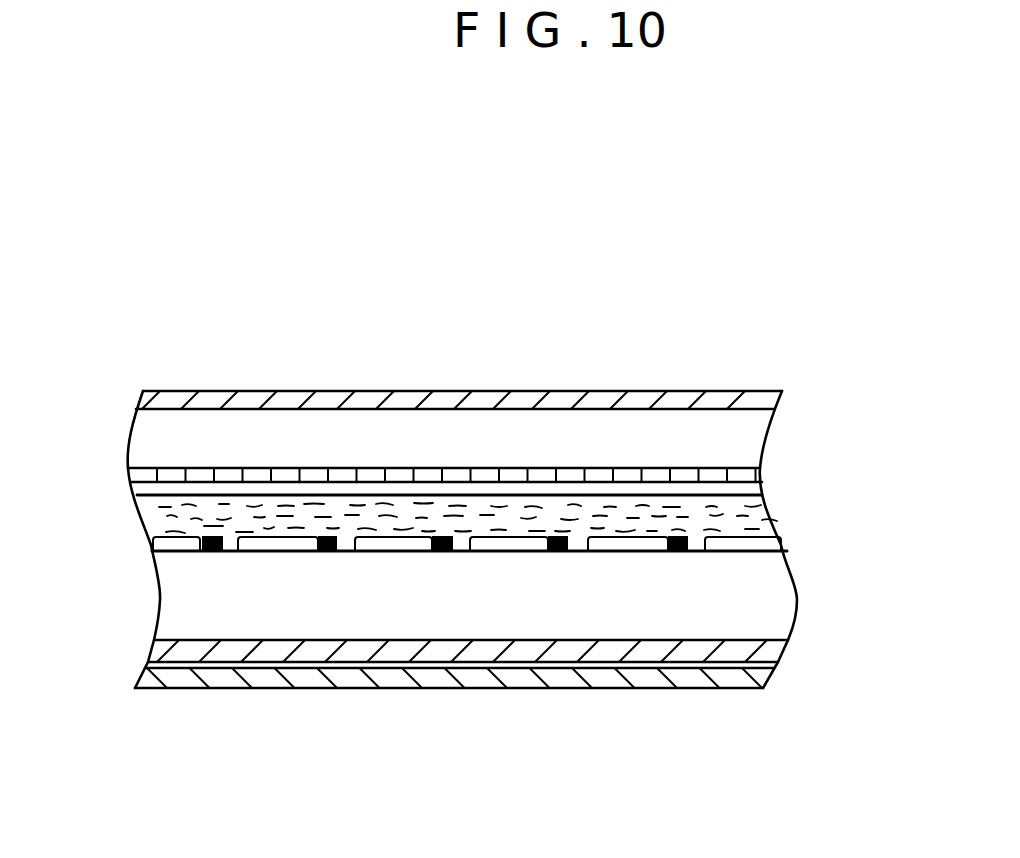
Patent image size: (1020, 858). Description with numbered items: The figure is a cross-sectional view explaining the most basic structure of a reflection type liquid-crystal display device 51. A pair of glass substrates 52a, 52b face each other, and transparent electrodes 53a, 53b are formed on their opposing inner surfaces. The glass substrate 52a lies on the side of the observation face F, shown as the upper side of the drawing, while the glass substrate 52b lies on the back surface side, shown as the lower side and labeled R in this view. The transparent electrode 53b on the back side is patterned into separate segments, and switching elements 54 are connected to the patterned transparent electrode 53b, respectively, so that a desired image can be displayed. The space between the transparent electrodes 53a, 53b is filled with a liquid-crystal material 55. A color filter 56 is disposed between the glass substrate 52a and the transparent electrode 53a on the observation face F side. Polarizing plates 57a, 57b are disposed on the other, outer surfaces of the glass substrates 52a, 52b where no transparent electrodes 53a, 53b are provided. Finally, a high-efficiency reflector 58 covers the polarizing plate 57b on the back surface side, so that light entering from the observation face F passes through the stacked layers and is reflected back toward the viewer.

The reflection type liquid-crystal display device 51 is at (527, 380).
The glass substrate 52a is at (747, 438).
The glass substrate 52b is at (252, 612).
The transparent electrode 53a is at (318, 492).
The transparent electrode 53b is at (155, 543).
The switching element 54 is at (208, 551).
The liquid-crystal material 55 is at (573, 508).
The color filter 56 is at (677, 475).
The polarizing plate 57a is at (453, 400).
The polarizing plate 57b is at (735, 652).
The high-efficiency reflector 58 is at (597, 677).
The observation face F is at (257, 390).
The rear side R is at (522, 687).